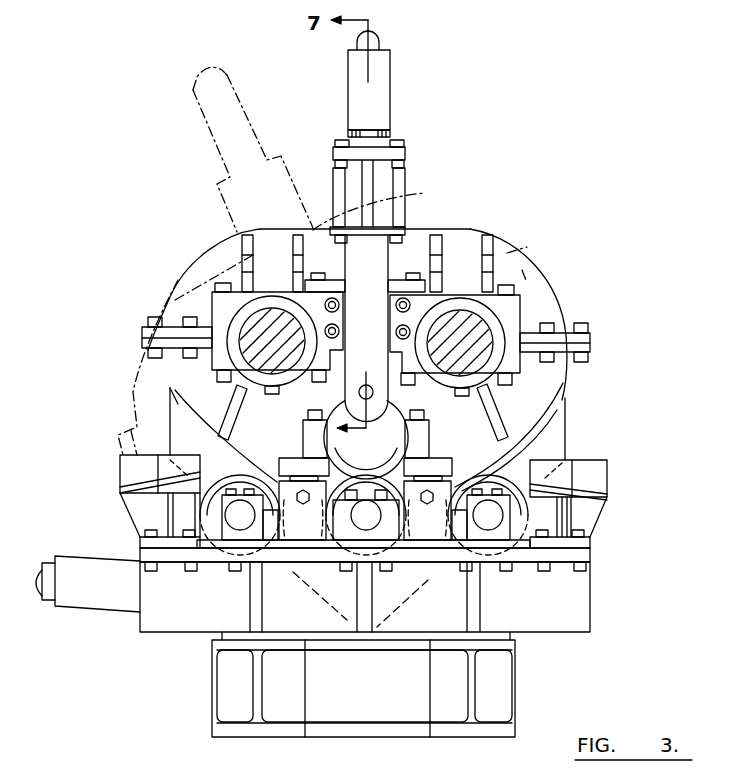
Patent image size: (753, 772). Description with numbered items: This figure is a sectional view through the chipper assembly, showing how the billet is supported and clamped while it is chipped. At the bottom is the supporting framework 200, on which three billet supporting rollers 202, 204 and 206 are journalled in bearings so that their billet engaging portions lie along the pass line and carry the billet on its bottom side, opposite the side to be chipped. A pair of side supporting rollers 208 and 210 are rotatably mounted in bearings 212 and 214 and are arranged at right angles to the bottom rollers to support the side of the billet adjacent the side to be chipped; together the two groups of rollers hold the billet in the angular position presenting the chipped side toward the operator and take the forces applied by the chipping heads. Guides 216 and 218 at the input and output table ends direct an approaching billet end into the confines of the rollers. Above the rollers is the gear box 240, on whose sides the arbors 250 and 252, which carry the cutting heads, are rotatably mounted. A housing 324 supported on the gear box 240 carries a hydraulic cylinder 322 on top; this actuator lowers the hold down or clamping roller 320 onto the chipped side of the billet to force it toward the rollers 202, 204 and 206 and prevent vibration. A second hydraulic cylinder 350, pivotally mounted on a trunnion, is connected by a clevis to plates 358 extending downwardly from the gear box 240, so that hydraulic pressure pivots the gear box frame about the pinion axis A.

The supporting framework 200 is at (602, 596).
The billet supporting roller 202 is at (203, 545).
The billet supporting roller 204 is at (400, 543).
The billet supporting roller 206 is at (517, 546).
The side supporting roller 208 is at (283, 463).
The side supporting roller 210 is at (449, 463).
The bearing 212 is at (300, 541).
The bearing 214 is at (434, 545).
The guide 216 is at (132, 473).
The guide 218 is at (603, 480).
The gear box 240 is at (556, 296).
The arbor 250 is at (480, 328).
The arbor 252 is at (248, 344).
The clamping roller 320 is at (375, 456).
The hydraulic cylinder 322 is at (380, 90).
The housing 324 is at (383, 262).
The hydraulic cylinder 350 is at (86, 598).
The plate 358 is at (558, 430).